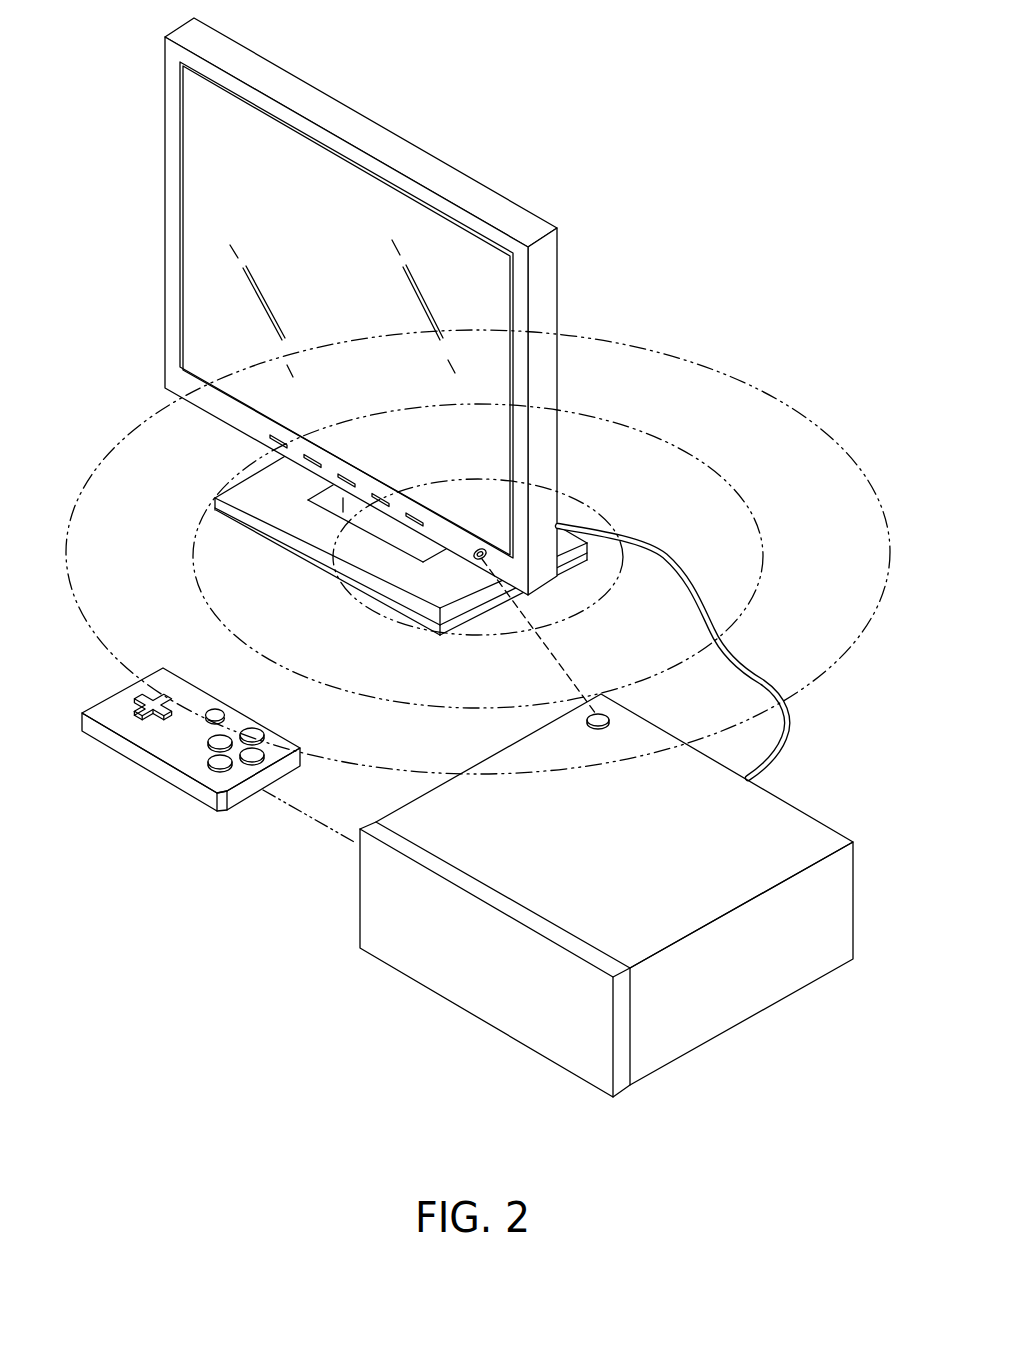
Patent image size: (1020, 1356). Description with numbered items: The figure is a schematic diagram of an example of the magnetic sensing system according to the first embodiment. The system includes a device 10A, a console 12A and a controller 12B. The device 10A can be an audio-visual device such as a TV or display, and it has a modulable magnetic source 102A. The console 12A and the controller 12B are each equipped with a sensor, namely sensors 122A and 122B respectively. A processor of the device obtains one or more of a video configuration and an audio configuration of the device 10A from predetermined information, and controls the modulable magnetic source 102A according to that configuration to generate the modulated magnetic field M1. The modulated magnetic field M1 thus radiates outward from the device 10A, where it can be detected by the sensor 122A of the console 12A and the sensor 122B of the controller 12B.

The device 10A is at (334, 100).
The modulable magnetic source 102A is at (481, 549).
The console 12A is at (665, 1068).
The sensor 122A is at (604, 727).
The controller 12B is at (173, 783).
The sensor 122B is at (215, 709).
The modulated magnetic field M1 is at (720, 370).